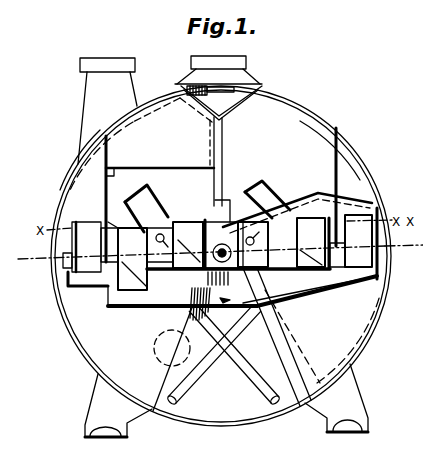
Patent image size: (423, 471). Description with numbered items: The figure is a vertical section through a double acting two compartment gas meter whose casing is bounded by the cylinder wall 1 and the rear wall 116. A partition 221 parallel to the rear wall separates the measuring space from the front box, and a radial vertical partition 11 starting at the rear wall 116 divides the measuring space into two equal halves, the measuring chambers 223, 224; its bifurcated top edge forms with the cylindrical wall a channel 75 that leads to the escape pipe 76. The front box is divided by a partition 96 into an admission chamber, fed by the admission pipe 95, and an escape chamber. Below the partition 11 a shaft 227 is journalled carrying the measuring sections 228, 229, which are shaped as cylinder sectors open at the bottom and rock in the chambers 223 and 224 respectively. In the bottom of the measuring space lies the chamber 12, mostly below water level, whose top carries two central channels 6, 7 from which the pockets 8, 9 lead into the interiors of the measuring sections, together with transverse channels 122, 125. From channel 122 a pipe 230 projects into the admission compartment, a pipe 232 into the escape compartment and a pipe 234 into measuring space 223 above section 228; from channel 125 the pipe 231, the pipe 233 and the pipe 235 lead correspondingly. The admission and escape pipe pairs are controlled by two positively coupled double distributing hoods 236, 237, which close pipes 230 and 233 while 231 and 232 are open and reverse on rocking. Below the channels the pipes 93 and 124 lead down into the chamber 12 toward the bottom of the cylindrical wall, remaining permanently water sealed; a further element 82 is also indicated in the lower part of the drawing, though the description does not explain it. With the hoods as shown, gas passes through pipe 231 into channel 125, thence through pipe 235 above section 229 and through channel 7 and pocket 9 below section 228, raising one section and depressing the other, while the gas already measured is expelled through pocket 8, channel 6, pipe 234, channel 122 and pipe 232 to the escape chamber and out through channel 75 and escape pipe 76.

The cylinder wall 1 is at (83, 351).
The central channel 6 is at (212, 307).
The central channel 7 is at (231, 298).
The pipe or duct (pocket) 8 is at (290, 300).
The pipe or duct (pocket) 9 is at (178, 316).
The radial vertical partition 11 is at (224, 154).
The chamber (partition) 12 is at (272, 335).
The channel 75 is at (221, 103).
The escape pipe 76 is at (222, 58).
The pivot 82 is at (155, 352).
The pipe 93 is at (268, 400).
The admission pipe 95 is at (115, 63).
The partition 96 is at (147, 168).
The rear wall 116 is at (420, 326).
The transverse channel 122 is at (238, 278).
The pipe 124 is at (182, 398).
The transverse channel 125 is at (312, 298).
The partition 221 is at (107, 191).
The measuring chamber 223 is at (73, 185).
The measuring chamber 224 is at (351, 151).
The shaft 227 is at (230, 226).
The measuring section 228 is at (108, 220).
The measuring section 229 is at (340, 200).
The pipe 230 is at (188, 245).
The pipe 231 is at (132, 259).
The pipe 232 is at (253, 244).
The pipe 233 is at (311, 242).
The connecting pipe 234 is at (87, 247).
The connecting pipe 235 is at (358, 241).
The double distributing hood 236 is at (160, 190).
The double distributing hood 237 is at (268, 182).